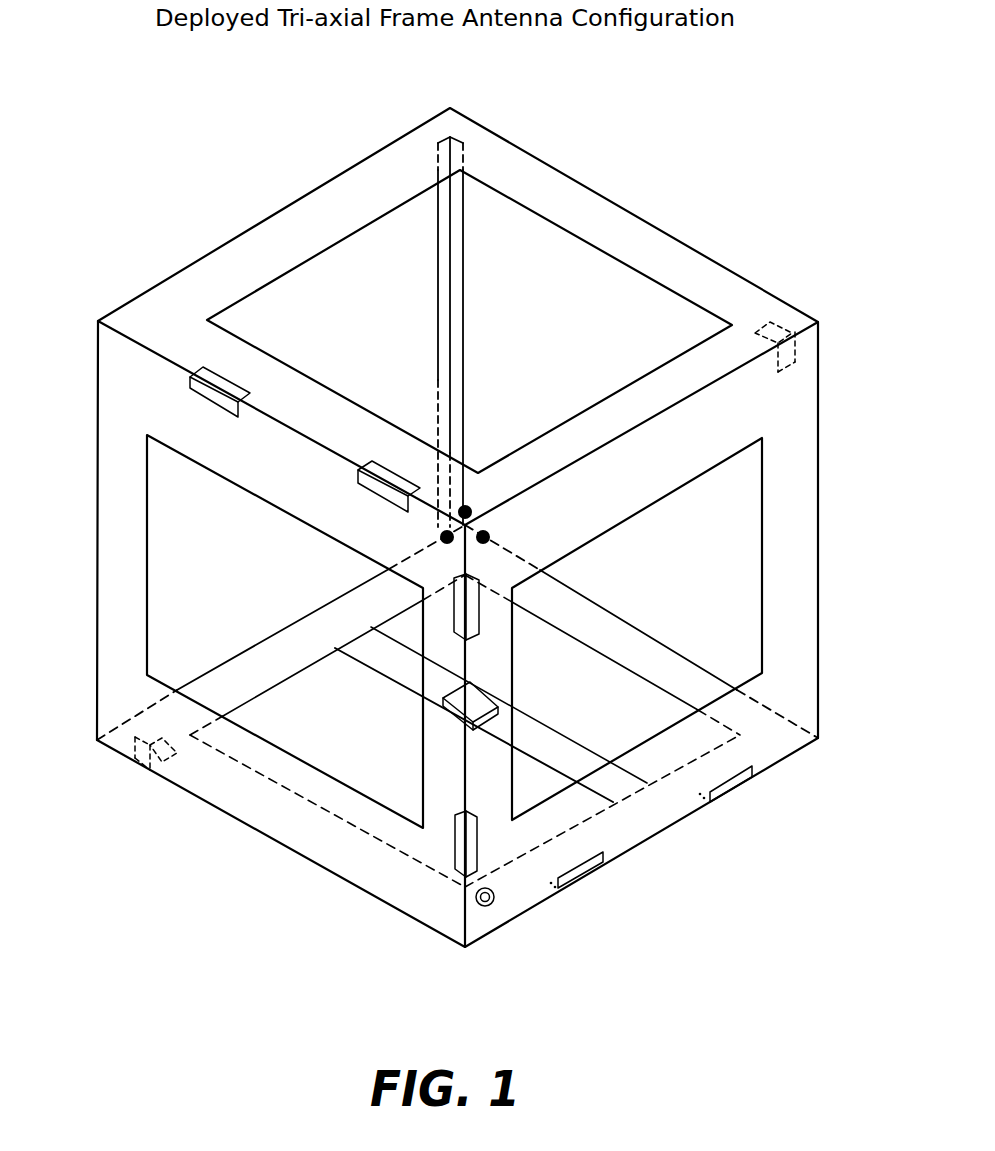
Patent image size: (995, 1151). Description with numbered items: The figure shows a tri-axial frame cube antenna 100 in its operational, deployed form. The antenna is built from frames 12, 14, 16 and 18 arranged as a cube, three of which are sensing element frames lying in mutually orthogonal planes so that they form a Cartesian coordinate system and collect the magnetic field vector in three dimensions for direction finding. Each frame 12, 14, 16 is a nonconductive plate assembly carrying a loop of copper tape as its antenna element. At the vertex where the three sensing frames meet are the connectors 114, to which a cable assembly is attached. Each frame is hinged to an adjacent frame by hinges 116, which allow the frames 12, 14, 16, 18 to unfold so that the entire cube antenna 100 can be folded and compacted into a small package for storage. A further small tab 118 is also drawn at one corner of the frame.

The tri-axial frame cube antenna 100 is at (183, 233).
The frame 16 is at (345, 190).
The frame 14 is at (370, 873).
The frame 12 is at (793, 530).
The hinge tab 118 is at (777, 325).
The connectors 114 is at (470, 505).
The frame 18 is at (143, 752).
The hinges 116 is at (576, 876).